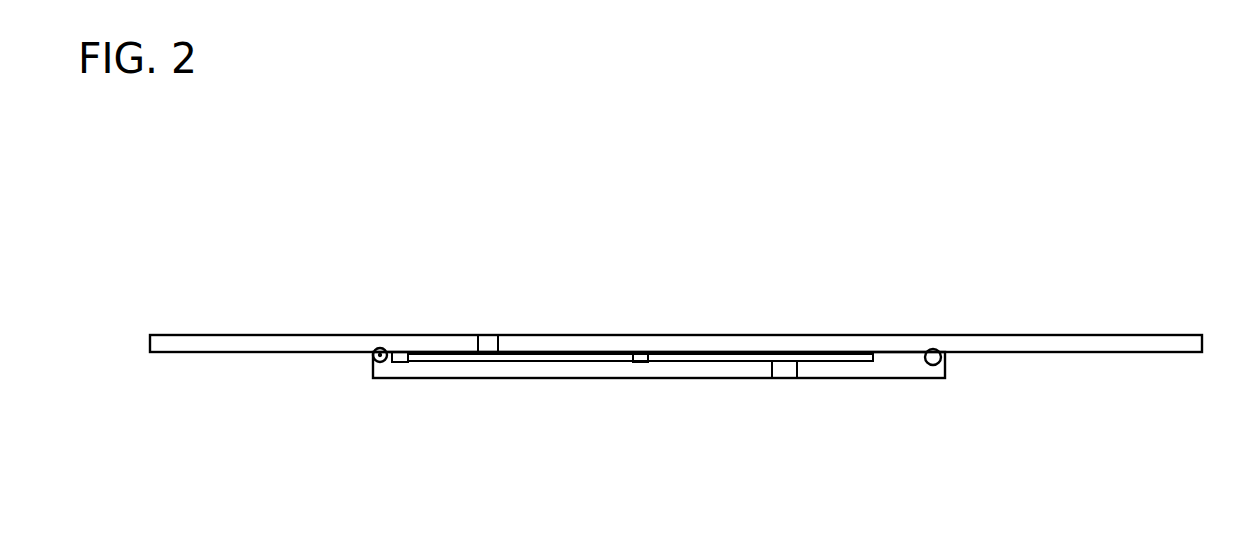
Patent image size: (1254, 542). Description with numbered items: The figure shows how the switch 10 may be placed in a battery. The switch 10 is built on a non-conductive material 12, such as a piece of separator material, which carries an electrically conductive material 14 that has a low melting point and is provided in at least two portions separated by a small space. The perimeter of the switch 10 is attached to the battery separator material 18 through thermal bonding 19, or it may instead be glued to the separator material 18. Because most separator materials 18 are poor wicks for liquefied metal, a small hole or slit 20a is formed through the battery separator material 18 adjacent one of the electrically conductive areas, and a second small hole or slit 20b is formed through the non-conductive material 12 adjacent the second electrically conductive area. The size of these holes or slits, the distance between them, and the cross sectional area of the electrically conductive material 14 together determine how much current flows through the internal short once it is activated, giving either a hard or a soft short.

The switch 10 is at (1140, 303).
The non-conductive material 12 is at (398, 380).
The electrically conductive material 14 is at (605, 355).
The battery separator material 18 is at (688, 334).
The thermal bonding 19 is at (381, 351).
The hole or slit 20a is at (492, 336).
The second hole or slit 20b is at (787, 379).